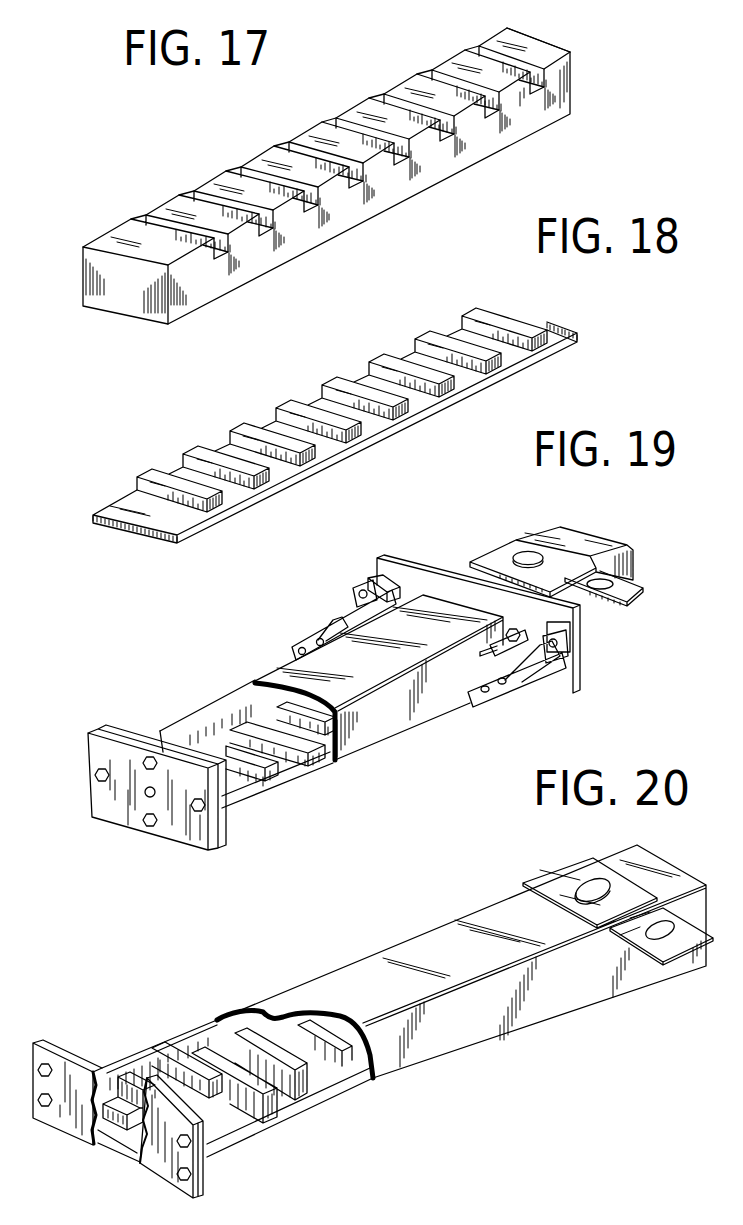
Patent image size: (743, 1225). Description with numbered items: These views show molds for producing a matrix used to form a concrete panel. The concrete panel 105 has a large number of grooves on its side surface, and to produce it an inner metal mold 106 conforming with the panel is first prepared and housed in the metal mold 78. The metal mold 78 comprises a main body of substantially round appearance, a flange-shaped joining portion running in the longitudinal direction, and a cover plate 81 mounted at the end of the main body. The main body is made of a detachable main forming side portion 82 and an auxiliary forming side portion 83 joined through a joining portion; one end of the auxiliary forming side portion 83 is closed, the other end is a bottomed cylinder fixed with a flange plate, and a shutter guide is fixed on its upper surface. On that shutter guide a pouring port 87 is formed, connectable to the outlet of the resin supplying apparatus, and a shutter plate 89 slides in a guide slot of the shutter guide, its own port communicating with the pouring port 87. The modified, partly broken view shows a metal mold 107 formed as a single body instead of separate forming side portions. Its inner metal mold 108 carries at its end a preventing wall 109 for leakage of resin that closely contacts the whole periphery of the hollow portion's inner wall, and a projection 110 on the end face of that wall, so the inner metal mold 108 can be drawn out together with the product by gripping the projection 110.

In FIG. 17, the concrete panel 105 is at (528, 36).
In FIG. 18, the inner metal mold 106 is at (530, 320).
In FIG. 19, the metal mold 78 is at (229, 693).
In FIG. 19, the cover plate 81 is at (177, 834).
In FIG. 20, the cover plate 81 is at (75, 1113).
In FIG. 19, the main forming side portion 82 is at (434, 707).
In FIG. 19, the auxiliary forming side portion 83 is at (600, 538).
In FIG. 19, the pouring port 87 is at (525, 551).
In FIG. 19, the shutter plate 89 is at (615, 582).
In FIG. 20, the metal mold 107 is at (461, 912).
In FIG. 20, the inner metal mold 108 is at (273, 1103).
In FIG. 20, the preventing wall for leakage of resin 109 is at (166, 1047).
In FIG. 20, the projection 110 is at (117, 1122).